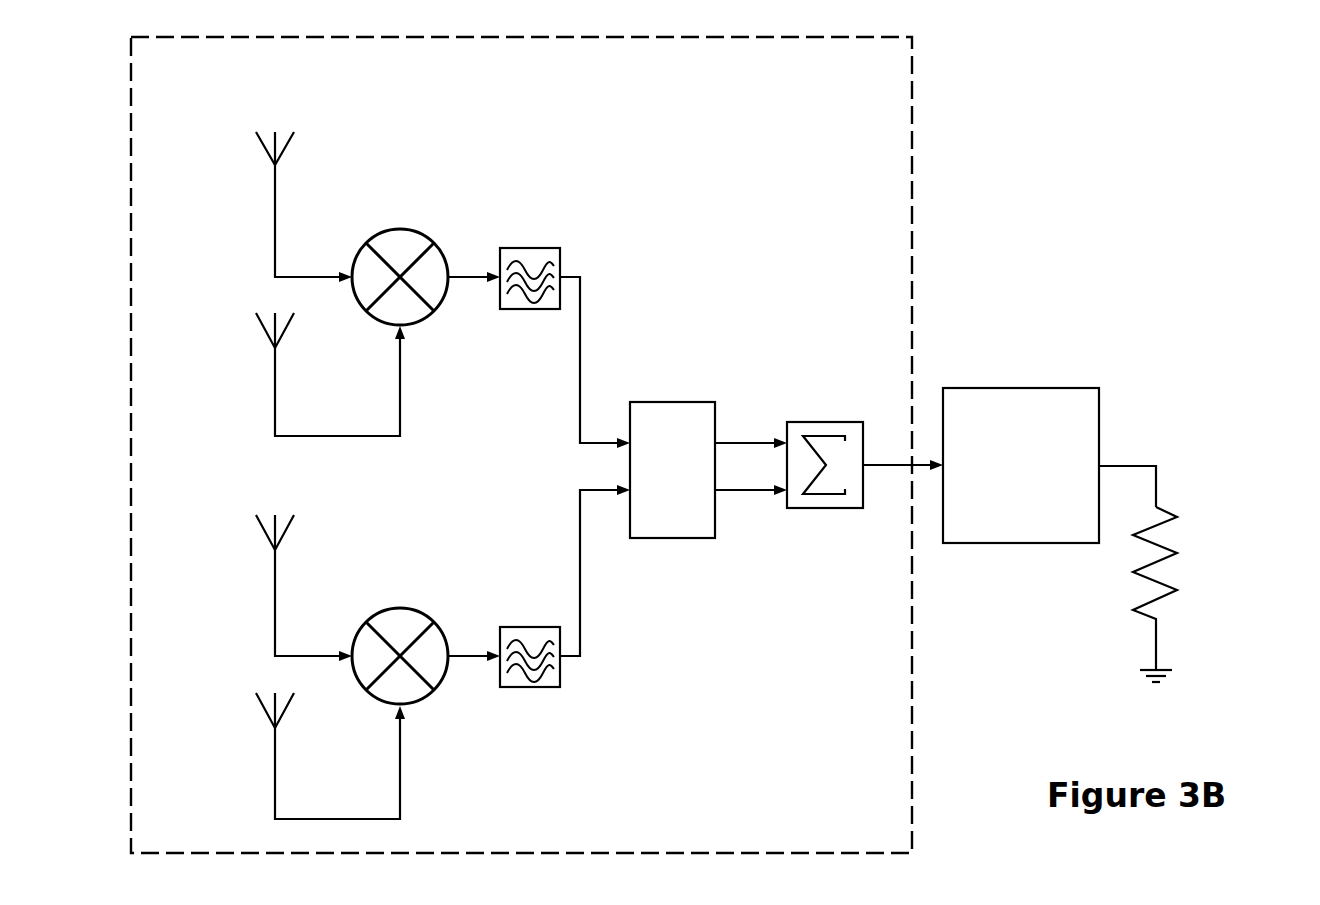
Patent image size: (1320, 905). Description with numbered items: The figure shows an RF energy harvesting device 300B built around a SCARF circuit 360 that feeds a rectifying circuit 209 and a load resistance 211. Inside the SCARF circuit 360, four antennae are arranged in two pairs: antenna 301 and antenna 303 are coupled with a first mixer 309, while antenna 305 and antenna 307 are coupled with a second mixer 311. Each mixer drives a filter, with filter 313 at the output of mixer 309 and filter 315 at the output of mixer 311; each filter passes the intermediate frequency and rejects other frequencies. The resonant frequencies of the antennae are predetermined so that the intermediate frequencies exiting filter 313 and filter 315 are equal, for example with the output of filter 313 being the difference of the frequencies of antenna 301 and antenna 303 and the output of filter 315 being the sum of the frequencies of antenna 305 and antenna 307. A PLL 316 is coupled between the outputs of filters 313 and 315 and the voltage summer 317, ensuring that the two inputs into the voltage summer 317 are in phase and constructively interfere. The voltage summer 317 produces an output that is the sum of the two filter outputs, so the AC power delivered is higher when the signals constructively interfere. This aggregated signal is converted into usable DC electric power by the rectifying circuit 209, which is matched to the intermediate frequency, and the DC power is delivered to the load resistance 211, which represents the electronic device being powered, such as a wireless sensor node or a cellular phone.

The RF energy harvesting device 300B is at (1162, 140).
The SCARF circuit 360 is at (875, 88).
The antenna 301 is at (183, 226).
The antenna 303 is at (183, 449).
The antenna 305 is at (183, 603).
The antenna 307 is at (183, 793).
The mixer 309 is at (381, 224).
The mixer 311 is at (381, 601).
The filter 313 is at (506, 248).
The filter 315 is at (506, 623).
The PLL 316 is at (647, 499).
The voltage summer 317 is at (798, 411).
The rectifying circuit 209 is at (995, 513).
The load resistance 211 is at (1200, 604).